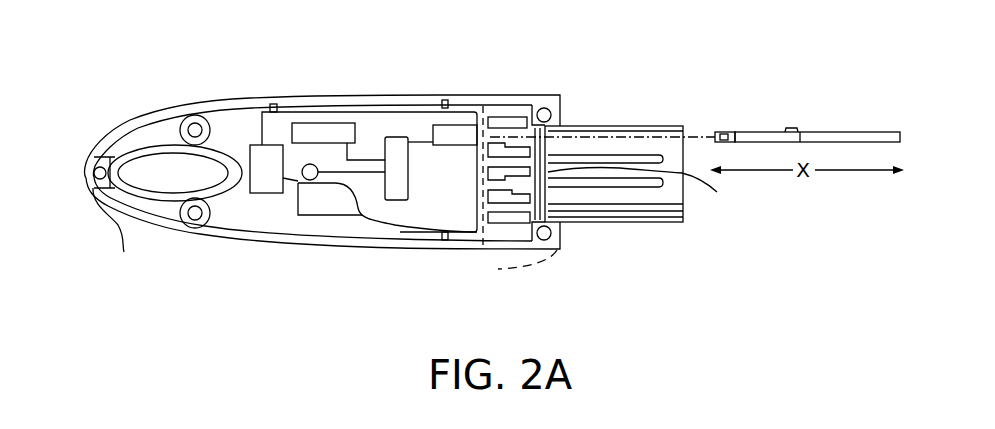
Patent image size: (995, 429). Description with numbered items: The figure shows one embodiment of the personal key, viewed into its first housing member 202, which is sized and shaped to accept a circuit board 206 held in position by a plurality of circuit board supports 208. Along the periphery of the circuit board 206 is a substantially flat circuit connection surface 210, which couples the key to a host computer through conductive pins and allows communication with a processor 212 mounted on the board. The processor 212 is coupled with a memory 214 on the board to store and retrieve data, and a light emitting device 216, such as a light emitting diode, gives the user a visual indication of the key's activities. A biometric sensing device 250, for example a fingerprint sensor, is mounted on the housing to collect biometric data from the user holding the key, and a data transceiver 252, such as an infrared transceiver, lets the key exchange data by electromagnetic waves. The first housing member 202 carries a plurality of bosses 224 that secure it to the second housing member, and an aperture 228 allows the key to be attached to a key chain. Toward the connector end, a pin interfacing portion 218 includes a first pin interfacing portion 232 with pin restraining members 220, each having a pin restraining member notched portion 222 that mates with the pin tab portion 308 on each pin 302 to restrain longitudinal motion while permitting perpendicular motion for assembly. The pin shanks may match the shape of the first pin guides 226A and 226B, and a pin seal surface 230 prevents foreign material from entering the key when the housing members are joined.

The first housing member 202 is at (107, 131).
The circuit board 206 is at (280, 102).
The circuit board supports 208 is at (430, 108).
The circuit connection surface 210 is at (455, 125).
The processor 212 is at (393, 136).
The memory 214 is at (317, 122).
The light emitting device 216 is at (303, 167).
The pin interfacing portion 218 is at (500, 269).
The pin restraining members 220 is at (503, 116).
The pin restraining member notched portion 222 is at (531, 115).
The bosses 224 is at (195, 114).
The first pin guide 226A is at (578, 136).
The first pin guide 226B is at (612, 154).
The aperture 228 is at (100, 152).
The pin seal surface 230 is at (649, 188).
The first pin interfacing portion 232 is at (490, 260).
The biometric sensing device 250 is at (315, 217).
The data transceiver 252 is at (240, 200).
The pins 302 is at (823, 132).
The pin tab portion 308 is at (788, 128).